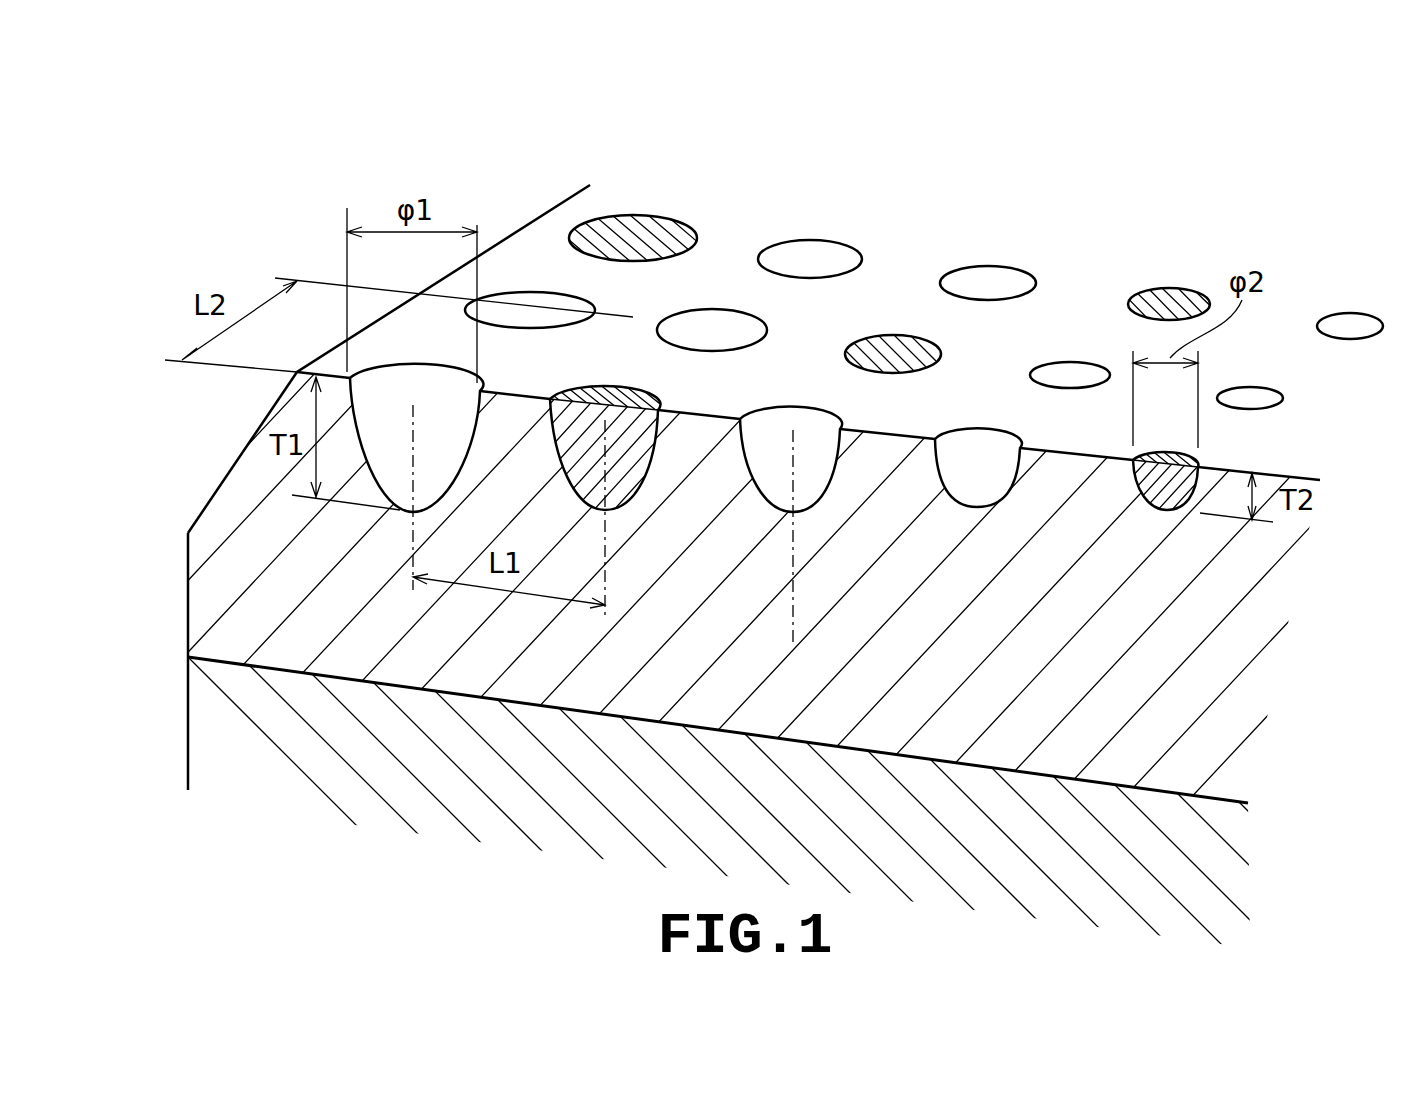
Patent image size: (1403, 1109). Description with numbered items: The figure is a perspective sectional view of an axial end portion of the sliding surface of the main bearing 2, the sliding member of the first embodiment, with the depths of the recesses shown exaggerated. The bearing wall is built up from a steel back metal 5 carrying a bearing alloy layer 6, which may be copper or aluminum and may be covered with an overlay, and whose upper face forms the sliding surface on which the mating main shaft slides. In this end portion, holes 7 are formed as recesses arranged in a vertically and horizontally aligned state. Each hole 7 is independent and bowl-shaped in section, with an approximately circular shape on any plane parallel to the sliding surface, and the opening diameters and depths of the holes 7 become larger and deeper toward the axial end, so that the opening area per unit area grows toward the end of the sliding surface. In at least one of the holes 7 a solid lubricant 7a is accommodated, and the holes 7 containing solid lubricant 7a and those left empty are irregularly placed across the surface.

The main bearing 2 is at (1098, 127).
The steel back metal 5 is at (205, 750).
The bearing alloy layer 6 is at (202, 608).
The holes 7 is at (818, 253).
The solid lubricant 7a is at (653, 230).